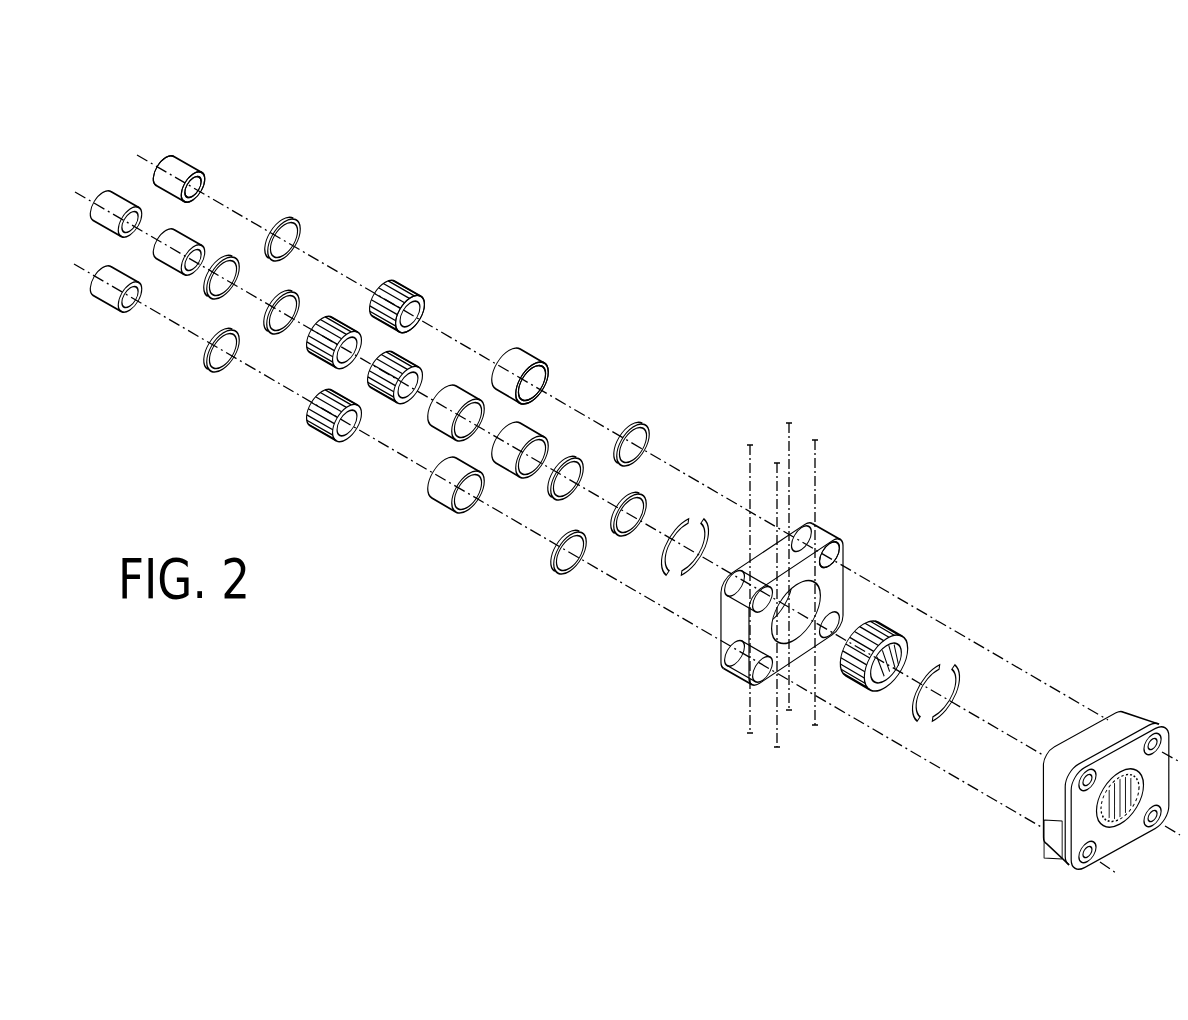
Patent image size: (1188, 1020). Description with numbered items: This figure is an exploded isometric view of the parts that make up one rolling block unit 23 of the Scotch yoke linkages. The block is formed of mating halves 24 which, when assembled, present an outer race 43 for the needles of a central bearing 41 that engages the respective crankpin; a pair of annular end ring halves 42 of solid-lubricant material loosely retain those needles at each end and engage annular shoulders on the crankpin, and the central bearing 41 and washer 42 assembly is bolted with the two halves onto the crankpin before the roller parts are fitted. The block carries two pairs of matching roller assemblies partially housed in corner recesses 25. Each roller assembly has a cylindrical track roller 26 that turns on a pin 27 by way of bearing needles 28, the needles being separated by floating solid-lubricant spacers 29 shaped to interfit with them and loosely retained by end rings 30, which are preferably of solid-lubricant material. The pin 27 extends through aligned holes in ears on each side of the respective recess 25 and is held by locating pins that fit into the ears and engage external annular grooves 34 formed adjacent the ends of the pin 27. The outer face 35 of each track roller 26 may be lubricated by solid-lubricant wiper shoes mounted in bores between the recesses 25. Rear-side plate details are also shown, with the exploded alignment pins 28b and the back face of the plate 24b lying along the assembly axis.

The rolling block unit 23 is at (1123, 692).
The mating half 24 is at (778, 636).
The plate rear face 24b is at (766, 595).
The corner recess 25 is at (782, 602).
The cylindrical track roller 26 is at (530, 353).
The pin 27 is at (178, 168).
The bearing needle 28 is at (412, 290).
The alignment pin 28b is at (790, 425).
The floating solid-lubricant spacer 29 is at (388, 287).
The end ring 30 is at (290, 227).
The external annular groove 34 is at (170, 157).
The outer face 35 is at (523, 363).
The central bearing 41 is at (895, 615).
The washer 42 is at (652, 572).
The outer race 43 is at (830, 583).